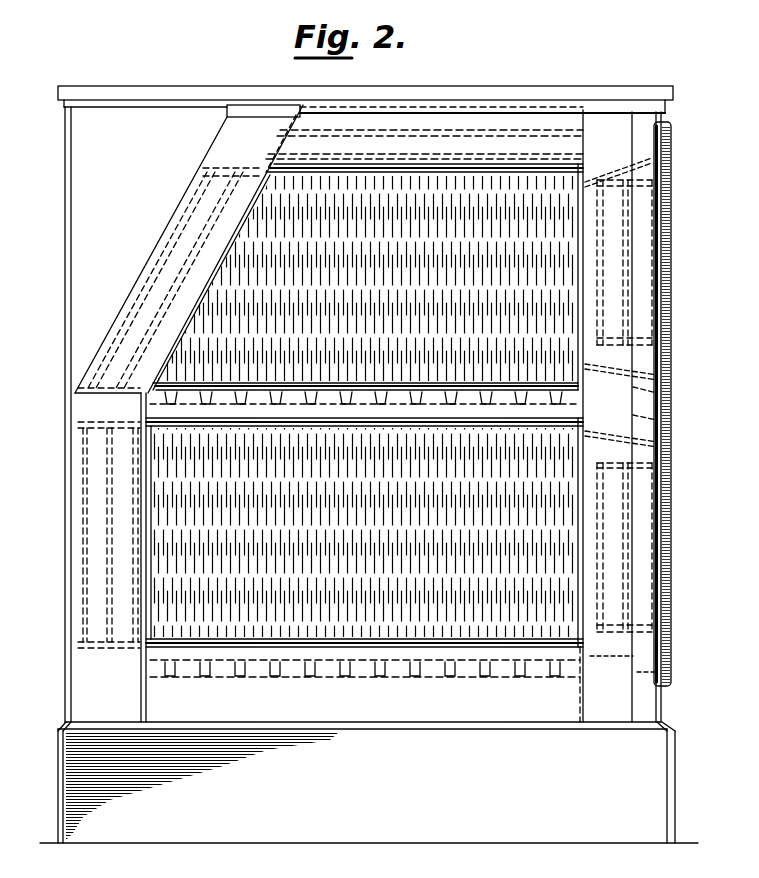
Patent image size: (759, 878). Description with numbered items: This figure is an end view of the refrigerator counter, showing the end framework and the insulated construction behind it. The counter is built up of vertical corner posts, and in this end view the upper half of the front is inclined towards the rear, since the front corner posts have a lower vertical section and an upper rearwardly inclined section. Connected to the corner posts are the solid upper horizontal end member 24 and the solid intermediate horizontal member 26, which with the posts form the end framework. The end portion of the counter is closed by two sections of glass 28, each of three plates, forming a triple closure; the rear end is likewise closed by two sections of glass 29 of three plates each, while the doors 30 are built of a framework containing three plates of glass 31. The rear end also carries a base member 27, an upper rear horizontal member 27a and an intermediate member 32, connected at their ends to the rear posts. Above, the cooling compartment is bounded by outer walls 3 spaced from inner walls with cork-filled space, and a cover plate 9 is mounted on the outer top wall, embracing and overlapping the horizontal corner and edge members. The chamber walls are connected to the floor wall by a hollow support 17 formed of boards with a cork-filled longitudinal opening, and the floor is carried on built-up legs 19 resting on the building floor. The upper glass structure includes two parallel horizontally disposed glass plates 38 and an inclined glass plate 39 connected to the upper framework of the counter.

The outer walls 3 is at (79, 237).
The cover plate 9 is at (209, 100).
The hollow support 17 is at (403, 684).
The legs 19 is at (369, 782).
The upper horizontal end member 24 is at (525, 140).
The intermediate horizontal member 26 is at (440, 408).
The base member 27 is at (610, 694).
The upper rear horizontal member 27a is at (607, 133).
The glass sections 28 is at (364, 416).
The glass sections 29 is at (600, 265).
The doors 30 is at (148, 307).
The glass plates 31 is at (220, 216).
The intermediate member 32 is at (617, 392).
The horizontal glass plates 38 is at (408, 120).
The inclined glass plate 39 is at (478, 152).